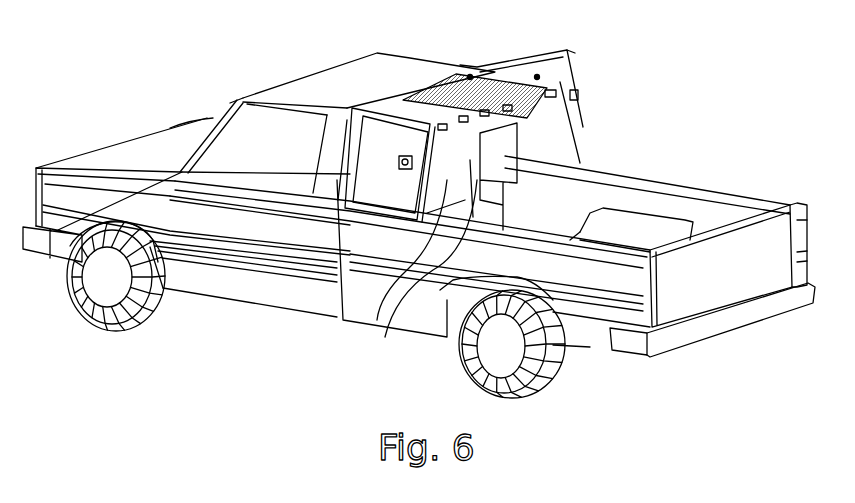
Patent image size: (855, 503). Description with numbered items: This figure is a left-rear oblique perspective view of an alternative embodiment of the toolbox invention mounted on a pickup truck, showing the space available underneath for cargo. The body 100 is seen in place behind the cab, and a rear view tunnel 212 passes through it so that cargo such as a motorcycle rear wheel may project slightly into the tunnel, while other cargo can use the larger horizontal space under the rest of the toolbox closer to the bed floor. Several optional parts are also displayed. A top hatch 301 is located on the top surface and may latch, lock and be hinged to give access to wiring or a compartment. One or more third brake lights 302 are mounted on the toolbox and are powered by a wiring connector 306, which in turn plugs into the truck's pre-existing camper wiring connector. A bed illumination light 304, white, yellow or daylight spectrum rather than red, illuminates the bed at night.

The body 100 is at (445, 290).
The rear view tunnel 212 is at (488, 157).
The top hatch 301 is at (493, 78).
The third brake light 302 is at (517, 110).
The bed illumination light 304 is at (398, 103).
The wiring connector 306 is at (470, 77).